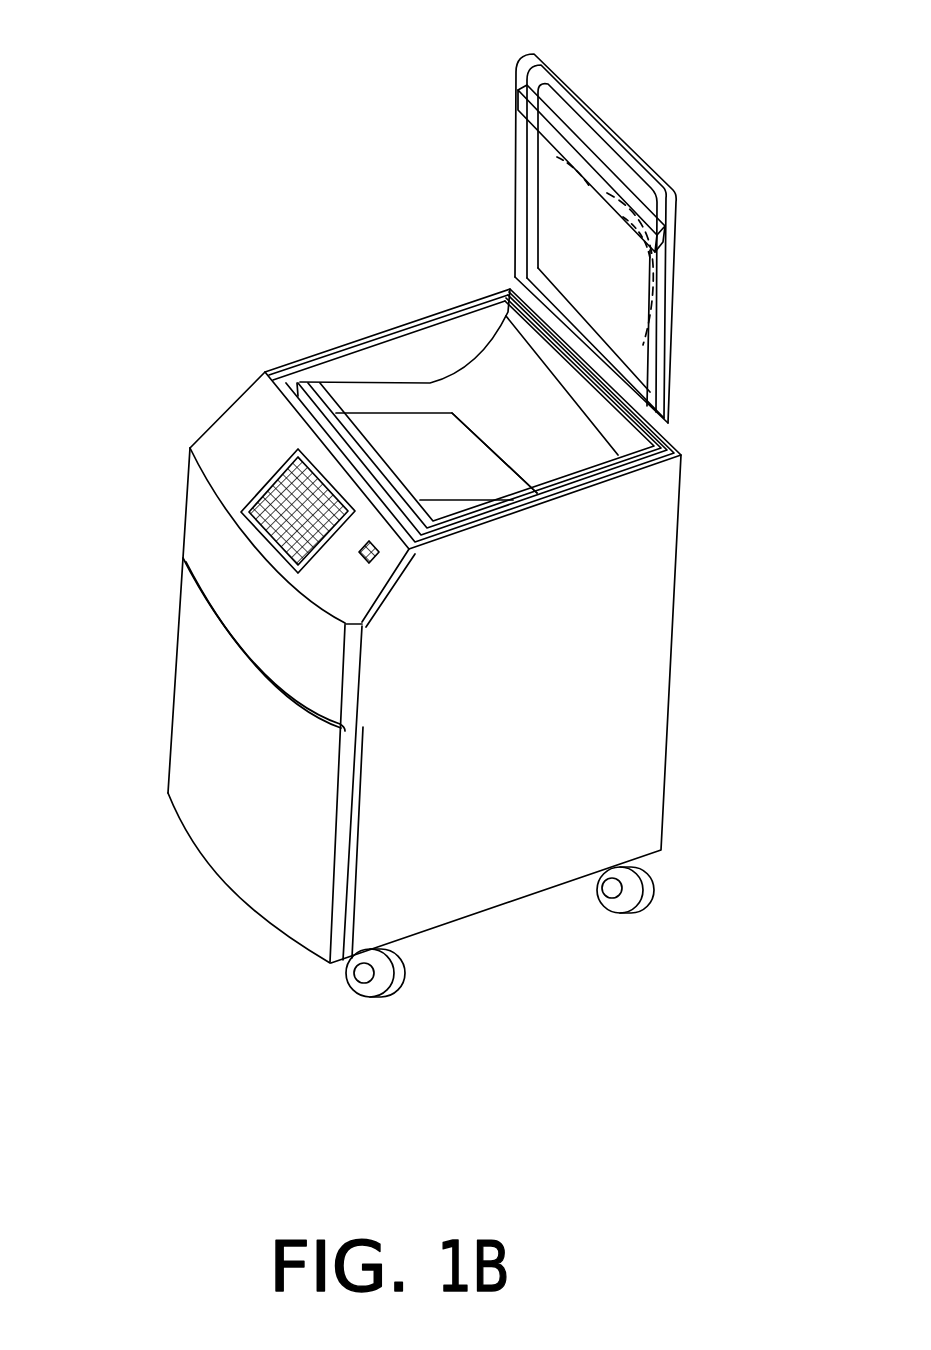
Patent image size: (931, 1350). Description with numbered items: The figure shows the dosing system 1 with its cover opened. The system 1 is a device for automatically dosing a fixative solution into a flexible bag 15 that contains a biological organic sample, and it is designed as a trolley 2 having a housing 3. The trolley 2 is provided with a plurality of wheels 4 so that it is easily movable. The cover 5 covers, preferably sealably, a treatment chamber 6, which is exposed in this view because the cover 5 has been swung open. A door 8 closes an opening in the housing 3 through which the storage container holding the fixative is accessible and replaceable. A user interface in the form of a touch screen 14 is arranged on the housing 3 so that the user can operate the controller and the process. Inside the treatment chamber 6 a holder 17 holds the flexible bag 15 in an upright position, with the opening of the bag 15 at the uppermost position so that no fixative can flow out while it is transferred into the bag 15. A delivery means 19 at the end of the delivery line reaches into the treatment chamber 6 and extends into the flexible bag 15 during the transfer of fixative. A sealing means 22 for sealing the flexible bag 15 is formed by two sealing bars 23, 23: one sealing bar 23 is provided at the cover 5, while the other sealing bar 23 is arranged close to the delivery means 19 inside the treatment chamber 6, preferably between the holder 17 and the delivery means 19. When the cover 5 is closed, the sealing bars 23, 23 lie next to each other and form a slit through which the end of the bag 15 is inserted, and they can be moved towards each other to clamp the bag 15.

The dosing system 1 is at (444, 520).
The trolley 2 is at (716, 52).
The housing 3 is at (641, 677).
The wheels 4 is at (651, 885).
The cover 5 is at (676, 302).
The treatment chamber 6 is at (463, 346).
The door 8 is at (225, 748).
The touch screen 14 is at (258, 497).
The flexible bag 15 is at (458, 474).
The holder 17 is at (568, 455).
The delivery means 19 is at (347, 451).
The sealing means 22 is at (440, 317).
The sealing bar 23 is at (517, 103).